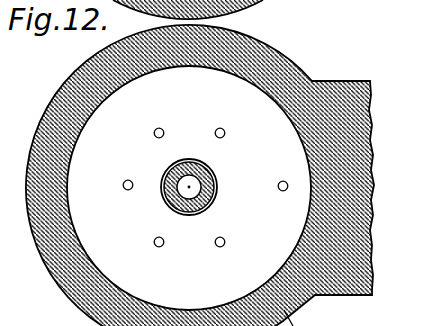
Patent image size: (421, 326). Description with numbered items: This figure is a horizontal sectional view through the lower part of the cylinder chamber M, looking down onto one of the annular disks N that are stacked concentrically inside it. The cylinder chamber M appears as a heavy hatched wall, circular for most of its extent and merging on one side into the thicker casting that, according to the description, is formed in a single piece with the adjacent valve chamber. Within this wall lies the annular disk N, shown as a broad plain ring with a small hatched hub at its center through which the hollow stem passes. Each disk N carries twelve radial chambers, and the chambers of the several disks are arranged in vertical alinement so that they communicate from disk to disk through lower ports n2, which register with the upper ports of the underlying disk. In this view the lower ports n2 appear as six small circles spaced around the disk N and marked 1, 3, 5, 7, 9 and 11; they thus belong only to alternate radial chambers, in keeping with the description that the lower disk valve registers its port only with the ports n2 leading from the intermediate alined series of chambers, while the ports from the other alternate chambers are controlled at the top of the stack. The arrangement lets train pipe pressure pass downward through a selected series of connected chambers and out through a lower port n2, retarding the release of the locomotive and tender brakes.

The cylinder chamber M is at (280, 63).
The annular disk N is at (208, 197).
The lower port n2 is at (163, 130).
The hole 1 is at (283, 181).
The hole 3 is at (225, 131).
The hole 5 is at (157, 128).
The hole 7 is at (129, 180).
The hole 9 is at (154, 242).
The hole 11 is at (224, 246).